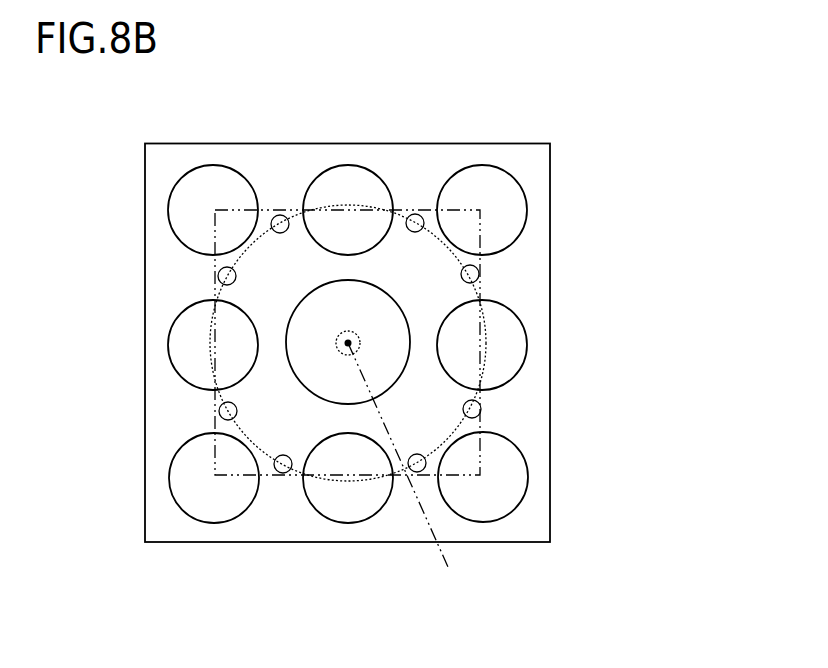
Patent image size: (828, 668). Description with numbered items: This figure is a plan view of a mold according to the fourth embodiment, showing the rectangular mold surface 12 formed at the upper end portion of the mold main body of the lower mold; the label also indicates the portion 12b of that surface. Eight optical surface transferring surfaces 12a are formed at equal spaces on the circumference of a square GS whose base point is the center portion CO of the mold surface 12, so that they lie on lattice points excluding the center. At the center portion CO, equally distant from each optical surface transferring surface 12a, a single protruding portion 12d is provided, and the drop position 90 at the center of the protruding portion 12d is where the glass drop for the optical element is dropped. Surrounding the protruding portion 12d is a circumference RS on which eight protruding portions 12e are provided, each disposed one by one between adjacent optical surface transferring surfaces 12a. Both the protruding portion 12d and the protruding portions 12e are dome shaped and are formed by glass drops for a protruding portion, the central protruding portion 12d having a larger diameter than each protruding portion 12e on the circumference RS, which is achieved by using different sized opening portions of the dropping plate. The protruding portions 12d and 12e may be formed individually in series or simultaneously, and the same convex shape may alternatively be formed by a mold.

The mold surface 12 is at (430, 322).
The optical surface transferring surface 12a is at (513, 205).
The substrate surface 12b is at (533, 413).
The protruding portion 12d is at (378, 303).
The protruding portion 12e is at (278, 215).
The drop position 90 is at (348, 343).
The circumference RS is at (346, 482).
The center portion CO is at (412, 466).
The square GS is at (460, 478).